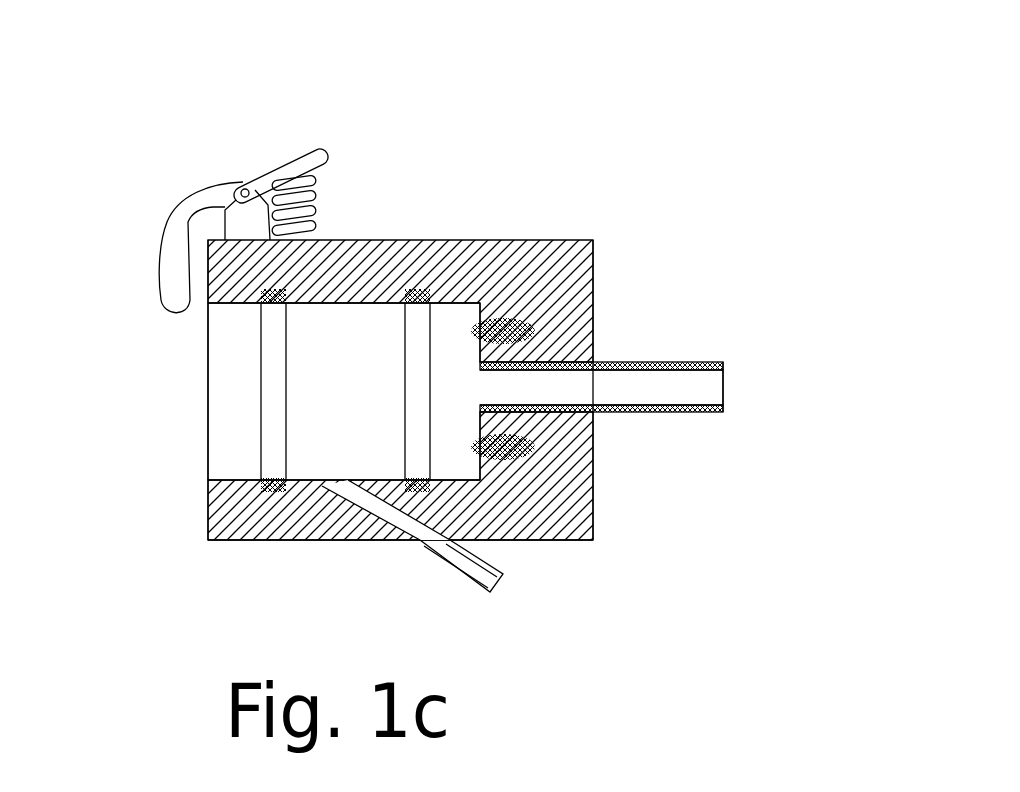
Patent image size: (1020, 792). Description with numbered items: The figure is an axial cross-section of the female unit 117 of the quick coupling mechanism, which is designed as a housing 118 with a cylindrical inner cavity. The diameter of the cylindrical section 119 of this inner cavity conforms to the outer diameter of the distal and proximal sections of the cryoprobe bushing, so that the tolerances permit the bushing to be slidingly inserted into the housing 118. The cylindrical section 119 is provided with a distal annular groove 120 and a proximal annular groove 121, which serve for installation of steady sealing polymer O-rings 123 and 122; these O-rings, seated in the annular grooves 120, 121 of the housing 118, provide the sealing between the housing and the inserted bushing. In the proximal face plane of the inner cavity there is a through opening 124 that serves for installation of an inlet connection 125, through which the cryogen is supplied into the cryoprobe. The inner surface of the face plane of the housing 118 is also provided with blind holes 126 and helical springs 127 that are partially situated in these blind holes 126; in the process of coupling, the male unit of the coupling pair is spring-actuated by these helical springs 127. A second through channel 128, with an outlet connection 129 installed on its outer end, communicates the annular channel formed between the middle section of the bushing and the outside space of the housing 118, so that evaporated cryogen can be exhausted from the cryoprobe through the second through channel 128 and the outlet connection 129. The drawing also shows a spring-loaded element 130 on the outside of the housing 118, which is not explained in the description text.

The female unit 117 is at (400, 160).
The housing 118 is at (288, 540).
The cylindrical section 119 is at (363, 540).
The distal annular groove 120 is at (208, 540).
The proximal annular groove 121 is at (463, 241).
The O-ring 122 is at (372, 222).
The O-ring 123 is at (457, 480).
The through opening 124 is at (597, 362).
The inlet connection 125 is at (660, 414).
The blind holes 126 is at (548, 468).
The helical springs 127 is at (550, 238).
The second through channel 128 is at (393, 540).
The outlet connection 129 is at (487, 598).
The latch lever 130 is at (192, 197).